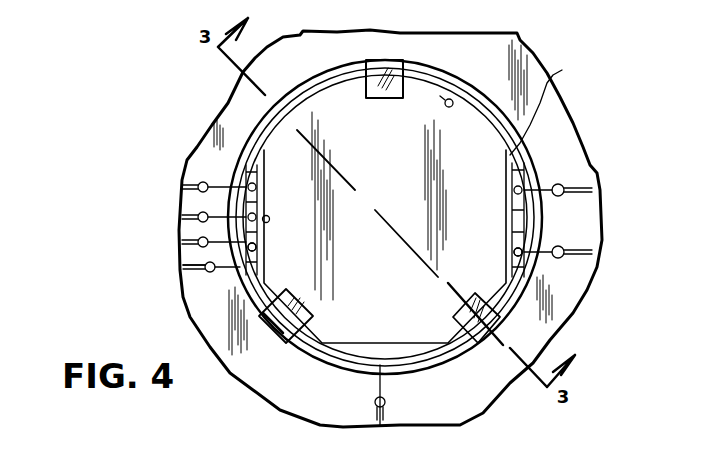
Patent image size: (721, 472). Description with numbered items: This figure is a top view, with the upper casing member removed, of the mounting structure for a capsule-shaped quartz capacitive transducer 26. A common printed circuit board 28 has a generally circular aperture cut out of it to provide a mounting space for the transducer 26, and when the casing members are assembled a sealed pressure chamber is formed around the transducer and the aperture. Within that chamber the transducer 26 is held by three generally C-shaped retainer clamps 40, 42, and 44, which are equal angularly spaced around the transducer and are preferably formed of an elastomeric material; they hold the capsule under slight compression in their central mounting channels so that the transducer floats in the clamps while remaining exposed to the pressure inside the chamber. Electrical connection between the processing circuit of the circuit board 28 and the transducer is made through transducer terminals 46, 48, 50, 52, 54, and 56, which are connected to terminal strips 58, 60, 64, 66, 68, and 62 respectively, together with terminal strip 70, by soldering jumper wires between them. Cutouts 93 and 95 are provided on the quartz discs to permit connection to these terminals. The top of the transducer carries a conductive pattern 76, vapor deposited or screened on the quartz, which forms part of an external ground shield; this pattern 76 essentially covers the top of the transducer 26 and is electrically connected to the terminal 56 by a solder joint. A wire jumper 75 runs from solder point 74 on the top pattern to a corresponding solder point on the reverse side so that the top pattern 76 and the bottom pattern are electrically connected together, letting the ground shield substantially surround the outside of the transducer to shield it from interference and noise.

The transducer 26 is at (514, 57).
The printed circuit board 28 is at (552, 107).
The retainer clamp 40 is at (382, 78).
The retainer clamp 42 is at (488, 315).
The retainer clamp 44 is at (292, 342).
The transducer terminal 46 is at (248, 185).
The transducer terminal 48 is at (248, 217).
The transducer terminal 50 is at (253, 247).
The transducer terminal 52 is at (520, 189).
The transducer terminal 54 is at (518, 253).
The transducer terminal 56 is at (267, 220).
The terminal strip 58 is at (188, 183).
The terminal strip 60 is at (248, 248).
The terminal strip 62 is at (187, 262).
The terminal strip 64 is at (188, 271).
The terminal strip 66 is at (592, 187).
The terminal strip 68 is at (592, 252).
The terminal strip 70 is at (388, 421).
The solder point 74 is at (450, 100).
The wire jumper 75 is at (483, 100).
The conductive pattern 76 is at (428, 76).
The cutout 93 is at (547, 83).
The cutout 95 is at (252, 175).